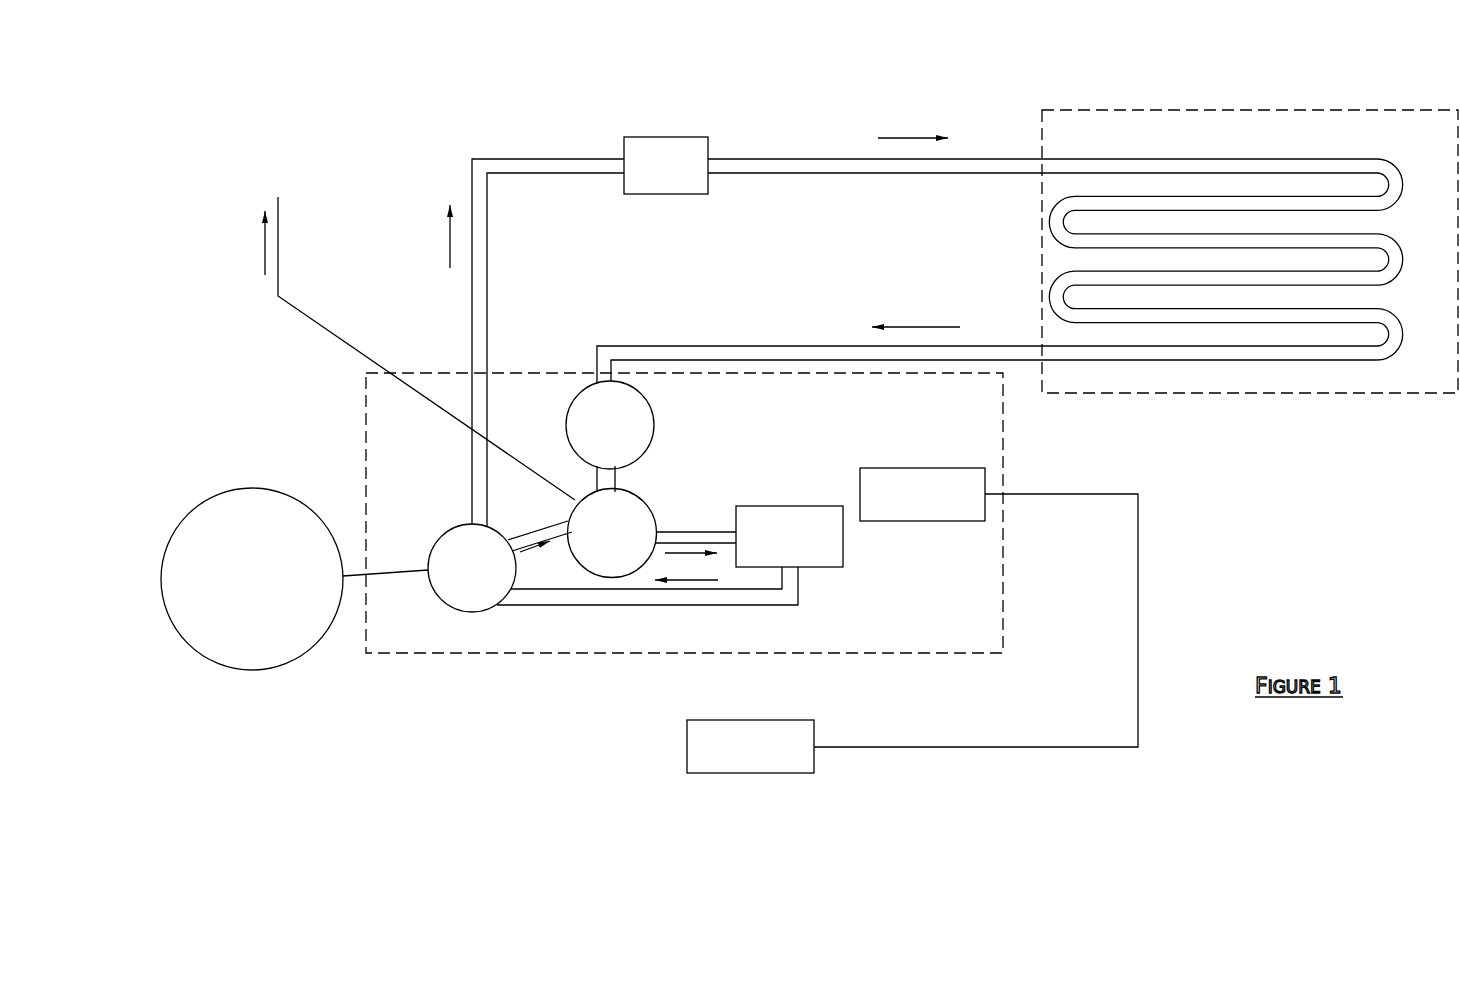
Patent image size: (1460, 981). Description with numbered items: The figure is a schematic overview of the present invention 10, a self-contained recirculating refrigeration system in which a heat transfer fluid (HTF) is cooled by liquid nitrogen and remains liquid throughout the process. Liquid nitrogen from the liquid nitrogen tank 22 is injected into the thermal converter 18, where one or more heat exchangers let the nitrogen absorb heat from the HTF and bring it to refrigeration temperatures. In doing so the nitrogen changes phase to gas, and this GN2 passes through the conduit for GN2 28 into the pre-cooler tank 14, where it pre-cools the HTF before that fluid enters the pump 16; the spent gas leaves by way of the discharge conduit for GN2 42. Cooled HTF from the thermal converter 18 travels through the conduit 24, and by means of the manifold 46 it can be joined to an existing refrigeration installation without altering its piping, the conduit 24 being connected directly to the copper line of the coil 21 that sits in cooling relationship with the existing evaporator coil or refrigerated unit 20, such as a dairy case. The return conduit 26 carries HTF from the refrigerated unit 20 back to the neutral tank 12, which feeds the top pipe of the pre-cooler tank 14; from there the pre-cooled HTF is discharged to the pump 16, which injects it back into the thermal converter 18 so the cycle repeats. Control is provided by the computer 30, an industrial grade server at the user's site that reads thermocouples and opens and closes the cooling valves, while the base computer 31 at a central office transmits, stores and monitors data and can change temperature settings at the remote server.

The present invention 10 is at (772, 117).
The neutral tank 12 is at (573, 397).
The pre-cooler tank 14 is at (643, 503).
The pump 16 is at (757, 498).
The thermal converter 18 is at (432, 537).
The existing evaporator coil 20 is at (1215, 102).
The coil 21 is at (1316, 156).
The liquid nitrogen tank 22 is at (255, 485).
The conduit 24 is at (543, 157).
The return conduit 26 is at (762, 338).
The conduit for GN2 28 is at (533, 528).
The computer 30 is at (897, 465).
The base computer 31 is at (753, 720).
The discharge conduit for GN2 42 is at (300, 308).
The manifold 46 is at (680, 135).